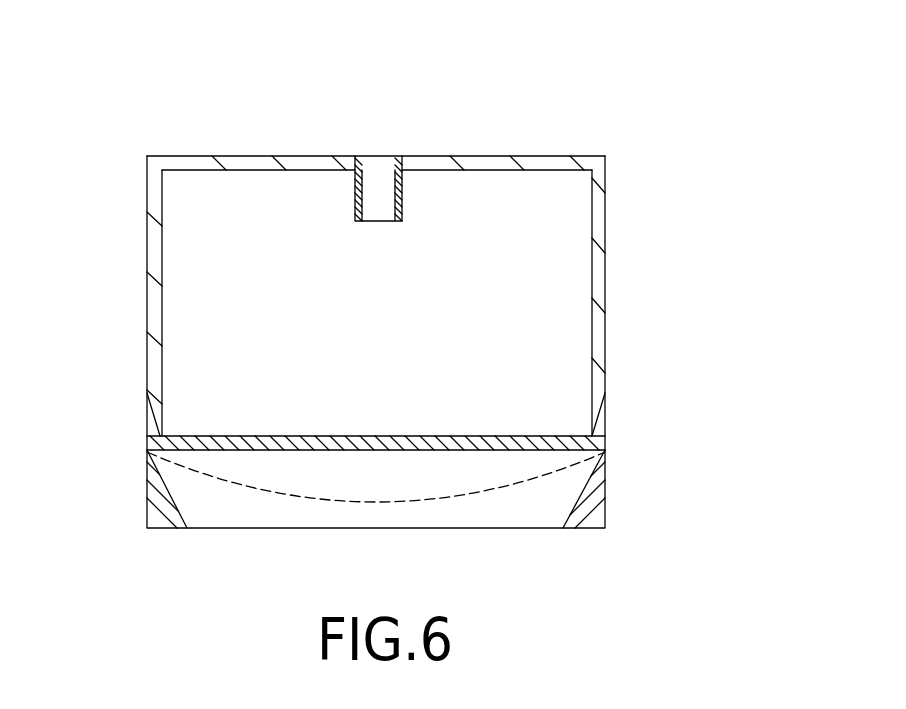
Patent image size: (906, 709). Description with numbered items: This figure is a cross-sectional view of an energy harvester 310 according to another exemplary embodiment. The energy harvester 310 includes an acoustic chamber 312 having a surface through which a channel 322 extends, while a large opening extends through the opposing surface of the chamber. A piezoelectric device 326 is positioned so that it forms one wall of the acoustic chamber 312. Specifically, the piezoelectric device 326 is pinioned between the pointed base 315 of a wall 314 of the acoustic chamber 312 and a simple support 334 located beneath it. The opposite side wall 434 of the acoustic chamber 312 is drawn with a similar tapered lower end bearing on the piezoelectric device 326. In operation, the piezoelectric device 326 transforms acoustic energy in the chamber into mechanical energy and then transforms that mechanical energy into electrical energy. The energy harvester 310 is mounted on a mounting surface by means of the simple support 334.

The energy harvester 310 is at (416, 271).
The acoustic chamber 312 is at (560, 270).
The wall 314 is at (600, 333).
The pointed base 315 is at (597, 434).
The channel 322 is at (380, 156).
The piezoelectric device 326 is at (362, 445).
The simple support 334 is at (593, 497).
The left side wall 434 is at (158, 305).